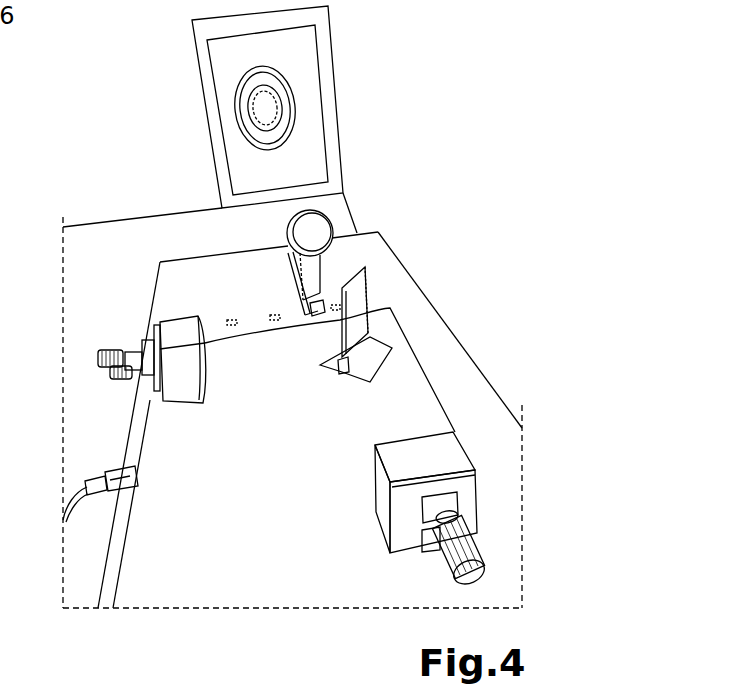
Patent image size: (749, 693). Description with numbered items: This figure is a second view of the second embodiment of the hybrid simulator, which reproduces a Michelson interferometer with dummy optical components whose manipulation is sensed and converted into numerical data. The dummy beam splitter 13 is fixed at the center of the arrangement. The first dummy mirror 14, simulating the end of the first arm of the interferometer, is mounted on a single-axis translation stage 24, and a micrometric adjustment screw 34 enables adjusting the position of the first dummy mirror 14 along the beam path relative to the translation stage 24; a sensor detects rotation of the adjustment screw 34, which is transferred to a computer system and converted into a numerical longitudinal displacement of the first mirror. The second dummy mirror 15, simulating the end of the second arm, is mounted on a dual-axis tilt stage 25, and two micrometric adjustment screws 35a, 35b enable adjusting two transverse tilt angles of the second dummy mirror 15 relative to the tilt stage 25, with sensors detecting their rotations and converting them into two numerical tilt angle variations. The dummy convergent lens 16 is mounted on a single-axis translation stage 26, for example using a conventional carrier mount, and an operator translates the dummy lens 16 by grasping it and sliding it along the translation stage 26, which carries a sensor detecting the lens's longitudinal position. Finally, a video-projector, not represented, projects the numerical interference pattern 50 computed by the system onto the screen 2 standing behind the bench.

The screen 2 is at (245, 208).
The numerical interference pattern 50 is at (272, 108).
The dummy convergent lens 16 is at (318, 228).
The single-axis translation stage 26 is at (300, 293).
The dummy beam splitter 13 is at (367, 290).
The second dummy mirror 15 is at (207, 352).
The dual-axis tilt stage 25 is at (160, 323).
The micrometric adjustment screw 35a is at (122, 350).
The micrometric adjustment screw 35b is at (122, 380).
The first dummy mirror 14 is at (377, 458).
The single-axis translation stage 24 is at (435, 473).
The micrometric adjustment screw 34 is at (432, 517).